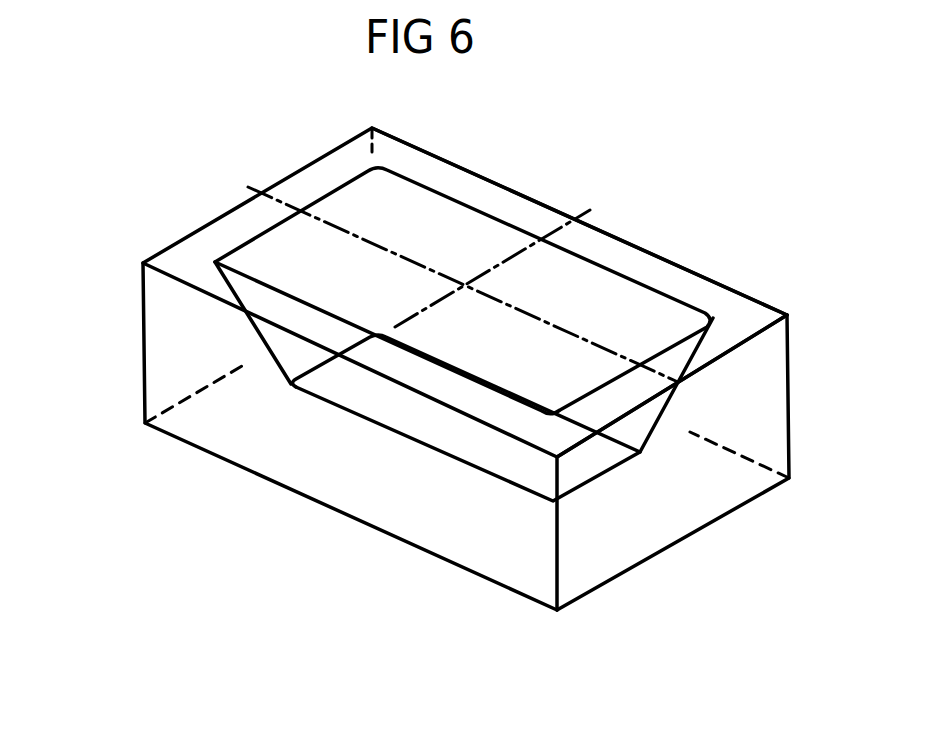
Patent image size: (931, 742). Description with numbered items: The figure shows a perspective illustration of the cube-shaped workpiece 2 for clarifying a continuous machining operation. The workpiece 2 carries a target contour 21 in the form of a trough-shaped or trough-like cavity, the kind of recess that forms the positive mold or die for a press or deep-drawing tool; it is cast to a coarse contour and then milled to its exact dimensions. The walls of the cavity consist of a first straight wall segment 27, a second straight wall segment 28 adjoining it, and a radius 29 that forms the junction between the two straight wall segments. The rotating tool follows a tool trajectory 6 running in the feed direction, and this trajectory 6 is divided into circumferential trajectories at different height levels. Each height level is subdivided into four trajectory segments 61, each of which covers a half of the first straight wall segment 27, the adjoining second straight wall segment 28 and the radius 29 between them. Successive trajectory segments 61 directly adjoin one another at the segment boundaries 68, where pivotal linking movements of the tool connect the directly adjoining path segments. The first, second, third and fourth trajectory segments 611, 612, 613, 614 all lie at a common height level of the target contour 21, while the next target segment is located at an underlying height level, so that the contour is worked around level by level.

The workpiece 2 is at (426, 352).
The target contour 21 is at (365, 226).
The first straight wall segment 27 is at (508, 237).
The second straight wall segment 28 is at (612, 446).
The radius 29 is at (712, 340).
The tool trajectory 6 is at (463, 338).
The trajectory segments 61 is at (463, 338).
The first trajectory segment 611 is at (572, 338).
The second trajectory segment 612 is at (488, 440).
The third trajectory segment 613 is at (300, 358).
The fourth trajectory segment 614 is at (445, 283).
The segment boundaries 68 is at (248, 187).